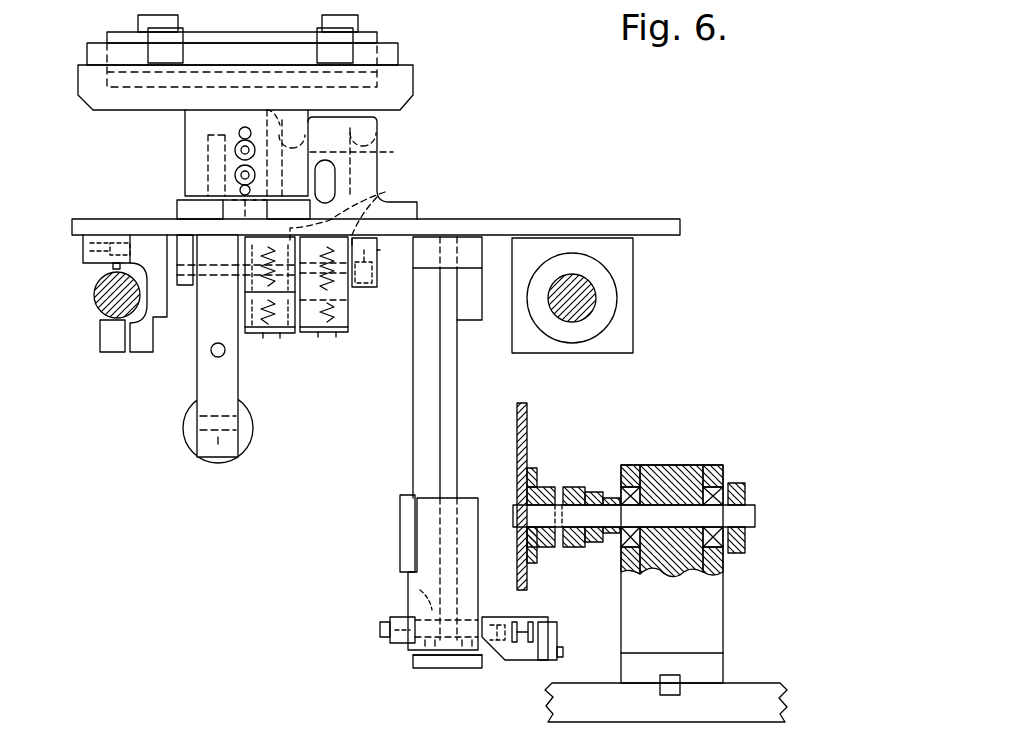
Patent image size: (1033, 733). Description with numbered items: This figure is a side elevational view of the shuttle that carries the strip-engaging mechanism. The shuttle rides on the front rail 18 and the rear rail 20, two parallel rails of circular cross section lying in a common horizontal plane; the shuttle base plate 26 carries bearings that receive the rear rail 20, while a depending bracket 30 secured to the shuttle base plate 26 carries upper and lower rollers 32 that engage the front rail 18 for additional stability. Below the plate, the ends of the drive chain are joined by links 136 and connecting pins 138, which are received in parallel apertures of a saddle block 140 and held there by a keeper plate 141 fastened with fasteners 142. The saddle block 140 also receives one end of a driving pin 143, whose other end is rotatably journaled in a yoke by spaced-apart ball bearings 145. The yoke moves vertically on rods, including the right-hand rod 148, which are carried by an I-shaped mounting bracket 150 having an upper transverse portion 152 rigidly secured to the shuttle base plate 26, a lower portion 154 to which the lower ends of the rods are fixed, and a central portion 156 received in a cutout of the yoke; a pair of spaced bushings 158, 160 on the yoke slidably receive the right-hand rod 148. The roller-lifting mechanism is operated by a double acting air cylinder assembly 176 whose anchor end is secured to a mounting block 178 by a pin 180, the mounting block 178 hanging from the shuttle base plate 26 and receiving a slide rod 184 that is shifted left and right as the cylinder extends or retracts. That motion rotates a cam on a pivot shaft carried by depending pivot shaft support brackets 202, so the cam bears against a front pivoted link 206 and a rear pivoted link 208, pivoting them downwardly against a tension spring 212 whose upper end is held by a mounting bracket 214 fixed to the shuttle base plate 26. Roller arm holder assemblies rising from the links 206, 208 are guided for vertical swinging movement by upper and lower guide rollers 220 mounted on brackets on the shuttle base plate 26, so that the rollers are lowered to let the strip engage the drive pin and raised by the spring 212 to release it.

The front rail 18 is at (105, 294).
The rear rail 20 is at (597, 298).
The shuttle base plate 26 is at (660, 228).
The depending bracket 30 is at (83, 245).
The upper and lower rollers 32 is at (112, 268).
The links 136 is at (514, 621).
The connecting pins 138 is at (517, 652).
The saddle block 140 is at (505, 656).
The keeper plate 141 is at (557, 625).
The fasteners 142 is at (563, 652).
The driving pin 143 is at (418, 673).
The ball bearings 145 is at (415, 600).
The right-hand rod 148 is at (457, 375).
The I-shaped mounting bracket 150 is at (400, 454).
The upper transverse portion 152 is at (470, 237).
The lower portion 154 is at (437, 668).
The central portion 156 is at (420, 421).
The bushing 158 is at (433, 512).
The bushing 160 is at (410, 583).
The double acting air cylinder assembly 176 is at (172, 412).
The mounting block 178 is at (207, 380).
The pin 180 is at (210, 466).
The slide rod 184 is at (224, 357).
The pivot shaft support brackets 202 is at (185, 290).
The front pivoted link 206 is at (250, 312).
The rear pivoted link 208 is at (338, 318).
The tension spring 212 is at (333, 300).
The mounting bracket 214 is at (396, 250).
The upper and lower guide rollers 220 is at (360, 197).